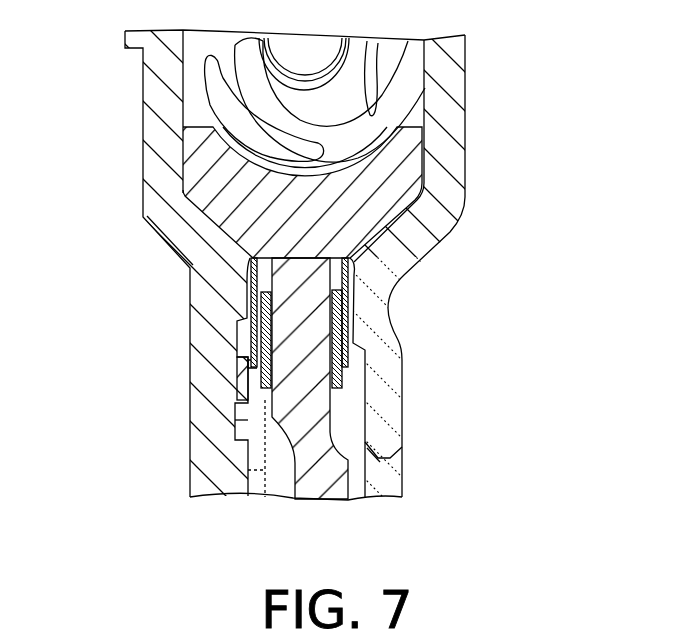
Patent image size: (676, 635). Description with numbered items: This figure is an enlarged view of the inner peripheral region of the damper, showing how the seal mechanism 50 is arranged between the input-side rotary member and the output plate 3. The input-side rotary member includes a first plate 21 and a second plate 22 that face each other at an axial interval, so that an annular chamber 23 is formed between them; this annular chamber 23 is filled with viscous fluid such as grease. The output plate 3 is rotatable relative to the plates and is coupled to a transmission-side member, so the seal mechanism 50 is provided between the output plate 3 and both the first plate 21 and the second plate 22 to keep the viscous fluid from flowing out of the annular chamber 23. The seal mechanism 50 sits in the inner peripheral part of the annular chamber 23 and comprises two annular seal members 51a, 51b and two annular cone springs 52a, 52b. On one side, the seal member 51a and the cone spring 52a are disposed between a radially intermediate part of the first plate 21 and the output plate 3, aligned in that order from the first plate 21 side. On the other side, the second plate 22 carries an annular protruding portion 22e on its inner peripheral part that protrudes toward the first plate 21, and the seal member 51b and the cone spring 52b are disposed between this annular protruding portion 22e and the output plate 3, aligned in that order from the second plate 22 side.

The output plate 3 is at (340, 455).
The first plate 21 is at (141, 141).
The second plate 22 is at (471, 76).
The annular protruding portion 22e is at (365, 312).
The annular chamber 23 is at (424, 140).
The seal mechanism 50 is at (315, 279).
The seal member 51a is at (251, 287).
The seal member 51b is at (339, 246).
The cone spring 52a is at (262, 376).
The cone spring 52b is at (345, 373).